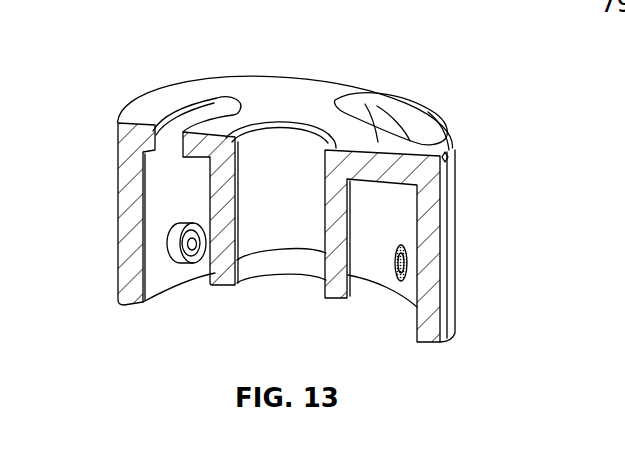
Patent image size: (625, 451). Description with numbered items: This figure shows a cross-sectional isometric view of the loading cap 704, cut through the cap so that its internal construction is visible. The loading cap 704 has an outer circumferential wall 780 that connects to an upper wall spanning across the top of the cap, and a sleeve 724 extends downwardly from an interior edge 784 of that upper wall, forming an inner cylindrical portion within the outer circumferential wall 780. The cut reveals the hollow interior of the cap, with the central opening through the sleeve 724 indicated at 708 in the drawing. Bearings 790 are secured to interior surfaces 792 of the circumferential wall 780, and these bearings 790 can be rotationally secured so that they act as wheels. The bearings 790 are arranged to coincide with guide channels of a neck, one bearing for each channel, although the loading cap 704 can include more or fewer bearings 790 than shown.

The loading cap 704 is at (464, 122).
The central opening 708 is at (280, 125).
The sleeve 724 is at (328, 180).
The outer circumferential wall 780 is at (460, 207).
The interior edge 784 is at (332, 133).
The bearings 790 is at (200, 264).
The interior surfaces 792 is at (162, 190).